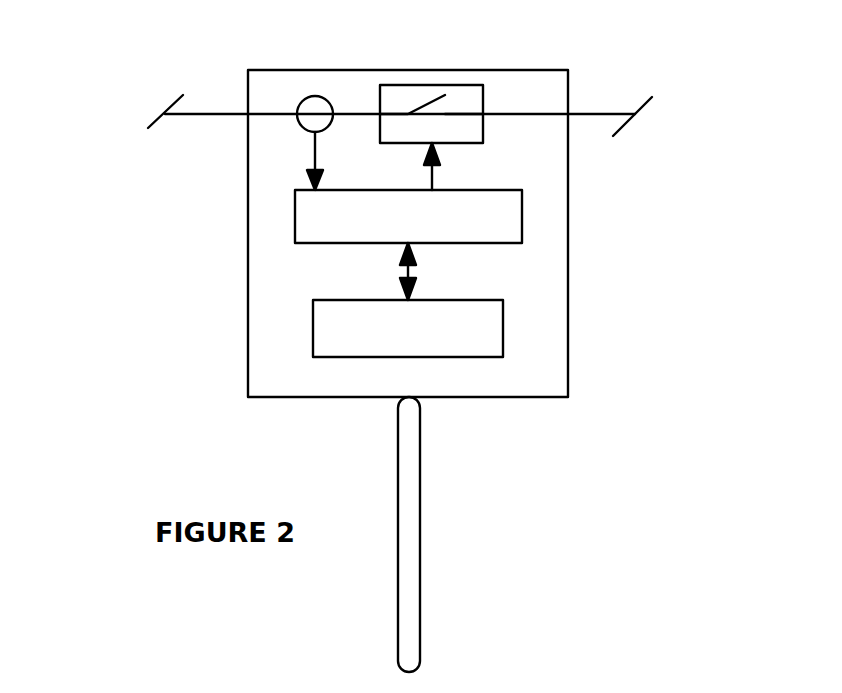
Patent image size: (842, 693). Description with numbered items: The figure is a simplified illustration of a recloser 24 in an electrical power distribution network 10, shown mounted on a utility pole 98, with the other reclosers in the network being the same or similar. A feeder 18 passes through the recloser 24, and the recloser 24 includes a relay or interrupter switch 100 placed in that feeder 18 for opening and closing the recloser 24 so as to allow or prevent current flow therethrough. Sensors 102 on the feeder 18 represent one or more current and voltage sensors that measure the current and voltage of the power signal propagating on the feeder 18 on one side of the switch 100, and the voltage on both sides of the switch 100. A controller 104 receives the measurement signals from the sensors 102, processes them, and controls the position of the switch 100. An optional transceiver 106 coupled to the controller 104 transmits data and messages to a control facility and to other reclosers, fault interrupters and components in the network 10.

The network 10 is at (190, 52).
The feeder 18 is at (195, 115).
The recloser 24 is at (570, 232).
The utility pole 98 is at (420, 535).
The interrupter switch 100 is at (432, 85).
The sensors 102 is at (315, 96).
The controller 104 is at (295, 215).
The transceiver 106 is at (313, 328).